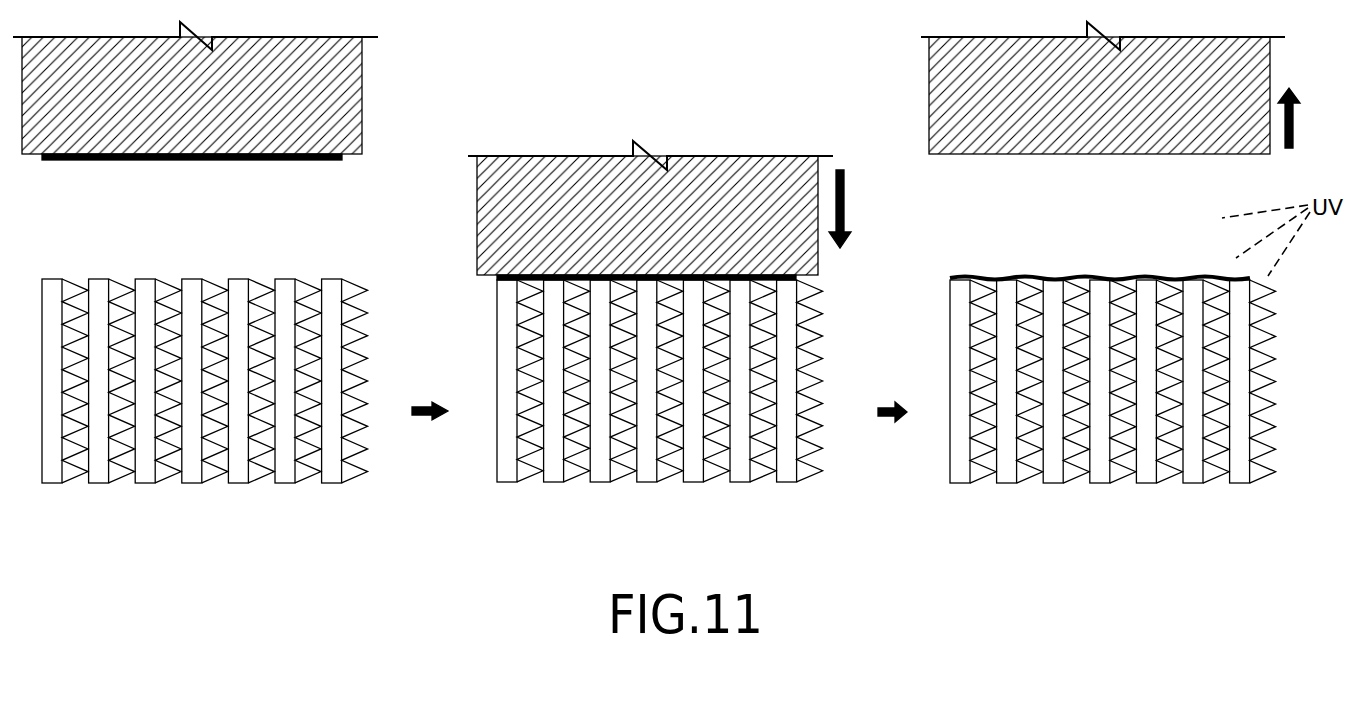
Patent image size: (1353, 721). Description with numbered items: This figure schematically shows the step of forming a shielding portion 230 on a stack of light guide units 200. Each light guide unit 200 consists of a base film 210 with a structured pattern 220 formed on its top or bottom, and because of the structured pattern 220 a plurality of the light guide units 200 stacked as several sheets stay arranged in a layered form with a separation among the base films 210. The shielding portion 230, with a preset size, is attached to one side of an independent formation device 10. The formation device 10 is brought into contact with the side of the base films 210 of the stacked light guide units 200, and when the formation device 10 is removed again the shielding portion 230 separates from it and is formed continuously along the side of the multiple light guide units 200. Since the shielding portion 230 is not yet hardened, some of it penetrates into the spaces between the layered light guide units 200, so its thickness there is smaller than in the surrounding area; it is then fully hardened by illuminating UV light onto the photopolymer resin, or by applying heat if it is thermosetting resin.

The formation device 10 is at (347, 73).
The light guide unit 200 is at (649, 340).
The base film 210 is at (333, 362).
The structured pattern 220 is at (357, 305).
The shielding portion 230 is at (342, 157).